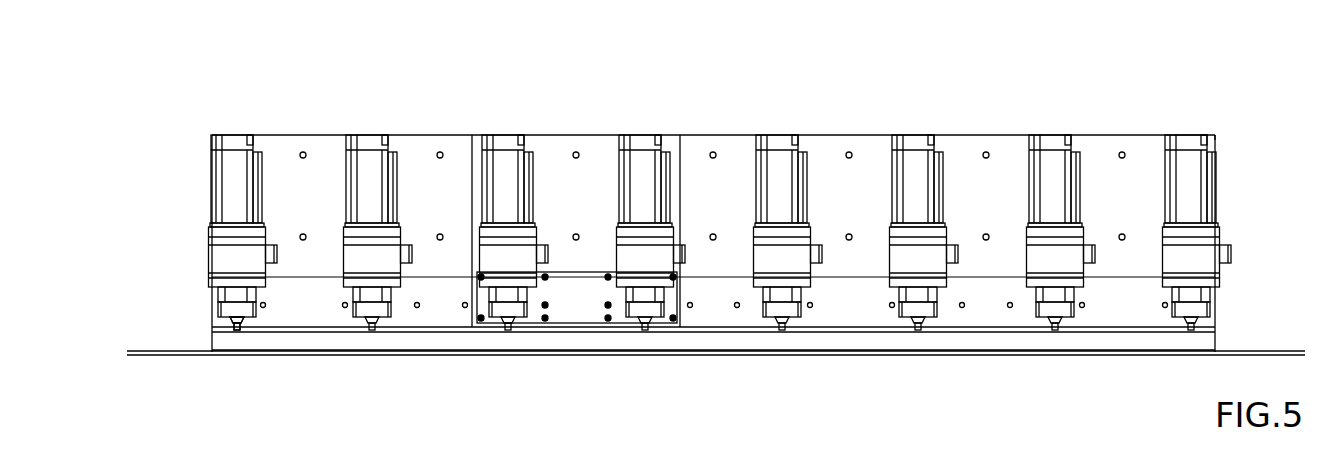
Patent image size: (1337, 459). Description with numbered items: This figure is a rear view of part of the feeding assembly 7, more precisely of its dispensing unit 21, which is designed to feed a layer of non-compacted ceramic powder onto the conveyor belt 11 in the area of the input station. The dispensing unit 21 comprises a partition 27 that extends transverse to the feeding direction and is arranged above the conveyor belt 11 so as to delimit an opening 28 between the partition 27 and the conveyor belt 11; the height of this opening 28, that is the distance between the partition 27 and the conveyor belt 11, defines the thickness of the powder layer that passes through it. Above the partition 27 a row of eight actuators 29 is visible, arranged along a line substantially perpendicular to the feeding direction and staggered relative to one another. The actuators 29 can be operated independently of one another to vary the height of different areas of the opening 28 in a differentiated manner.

The feeding assembly 7 is at (1071, 88).
The conveyor belt 11 is at (1259, 352).
The dispensing unit 21 is at (460, 101).
The partition 27 is at (217, 320).
The opening 28 is at (1222, 348).
The actuator 29 is at (232, 192).